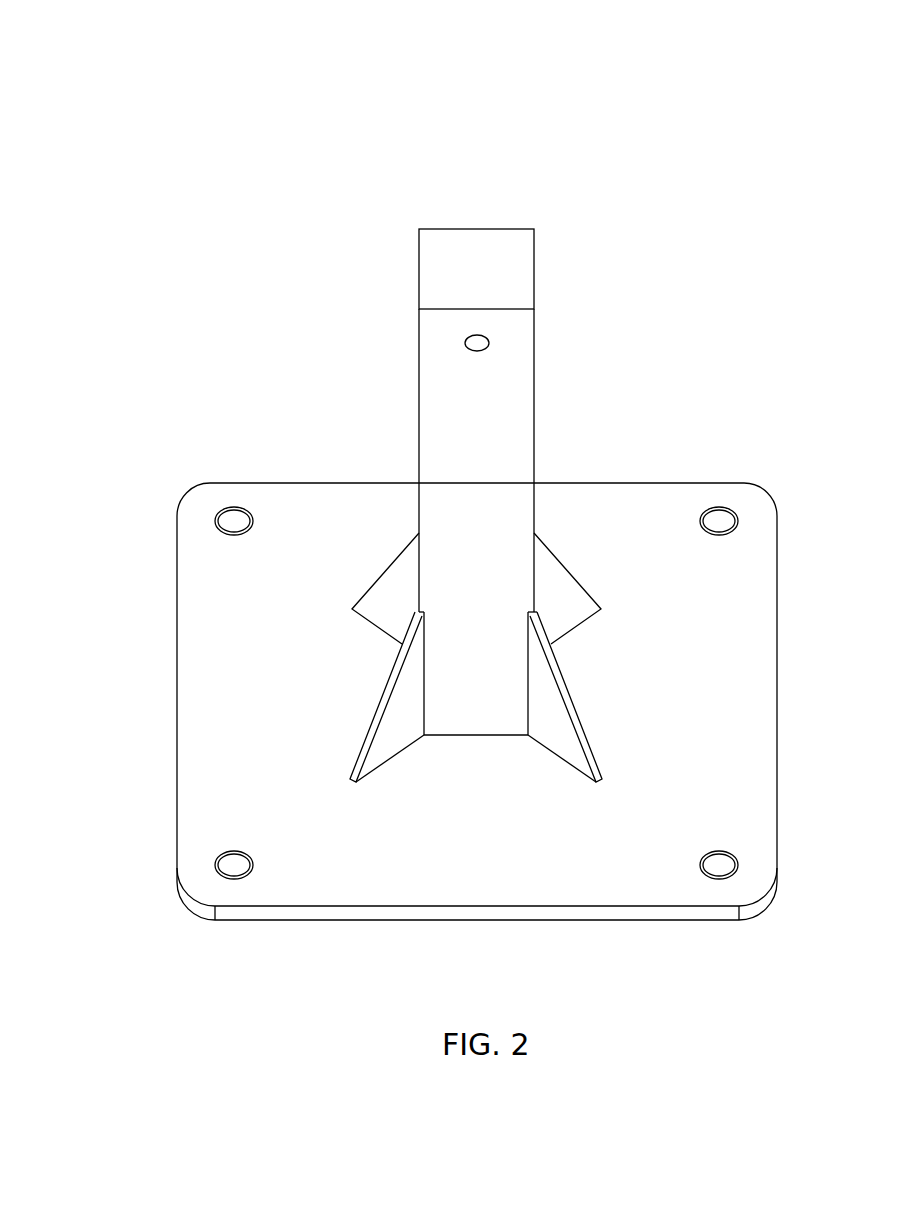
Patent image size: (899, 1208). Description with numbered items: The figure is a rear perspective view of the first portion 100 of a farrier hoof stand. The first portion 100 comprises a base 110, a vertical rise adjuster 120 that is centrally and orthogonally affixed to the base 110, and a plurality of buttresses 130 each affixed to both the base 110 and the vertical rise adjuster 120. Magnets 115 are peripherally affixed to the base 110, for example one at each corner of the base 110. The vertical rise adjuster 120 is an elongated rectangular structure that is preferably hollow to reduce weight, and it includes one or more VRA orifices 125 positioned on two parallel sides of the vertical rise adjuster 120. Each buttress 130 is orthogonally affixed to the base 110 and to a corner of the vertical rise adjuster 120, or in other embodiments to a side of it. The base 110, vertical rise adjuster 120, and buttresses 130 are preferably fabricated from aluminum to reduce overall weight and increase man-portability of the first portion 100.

The first portion 100 is at (139, 135).
The base 110 is at (248, 483).
The magnets 115 is at (719, 535).
The vertical rise adjuster 120 is at (419, 357).
The VRA orifices 125 is at (477, 351).
The buttresses 130 is at (588, 733).